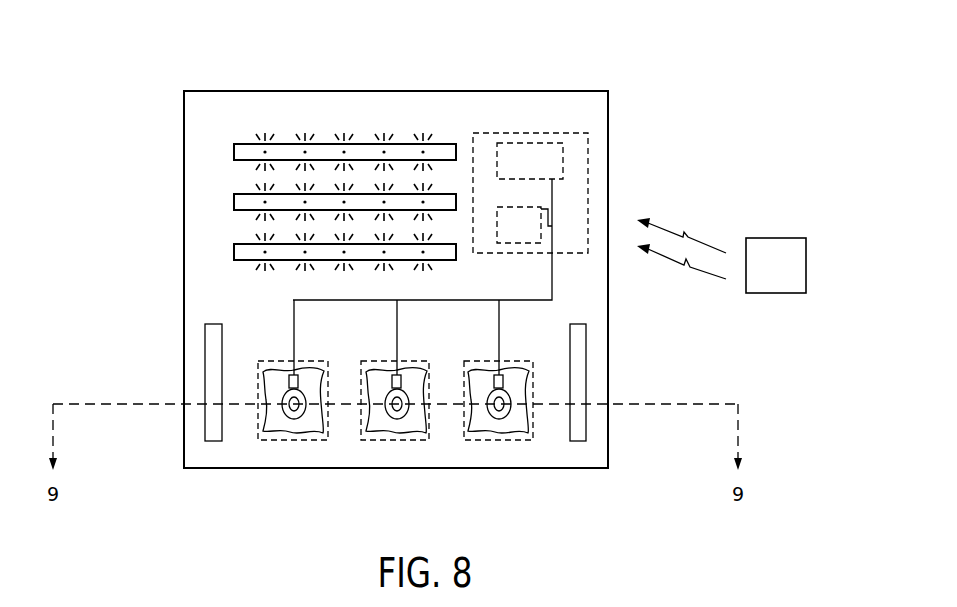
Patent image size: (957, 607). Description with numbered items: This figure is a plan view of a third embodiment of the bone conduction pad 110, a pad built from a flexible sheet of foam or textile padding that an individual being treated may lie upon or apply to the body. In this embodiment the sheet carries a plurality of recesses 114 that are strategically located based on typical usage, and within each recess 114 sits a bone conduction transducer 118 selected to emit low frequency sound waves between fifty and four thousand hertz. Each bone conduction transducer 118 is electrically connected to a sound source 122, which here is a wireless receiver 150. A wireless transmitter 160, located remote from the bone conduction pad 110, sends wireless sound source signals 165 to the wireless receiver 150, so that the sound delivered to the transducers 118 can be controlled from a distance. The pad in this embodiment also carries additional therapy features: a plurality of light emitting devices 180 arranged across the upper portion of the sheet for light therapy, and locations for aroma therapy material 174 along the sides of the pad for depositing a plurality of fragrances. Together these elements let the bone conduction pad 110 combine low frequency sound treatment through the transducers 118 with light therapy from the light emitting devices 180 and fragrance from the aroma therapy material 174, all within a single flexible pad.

The bone conduction pad 110 is at (152, 59).
The light emitting devices 180 is at (234, 255).
The sound source 122 is at (563, 163).
The wireless receiver 150 is at (552, 211).
The wireless transmitter 160 is at (777, 238).
The wireless sound source signals 165 is at (690, 272).
The aroma therapy material 174 is at (205, 347).
The recess 114 is at (298, 441).
The bone conduction transducer 118 is at (303, 390).